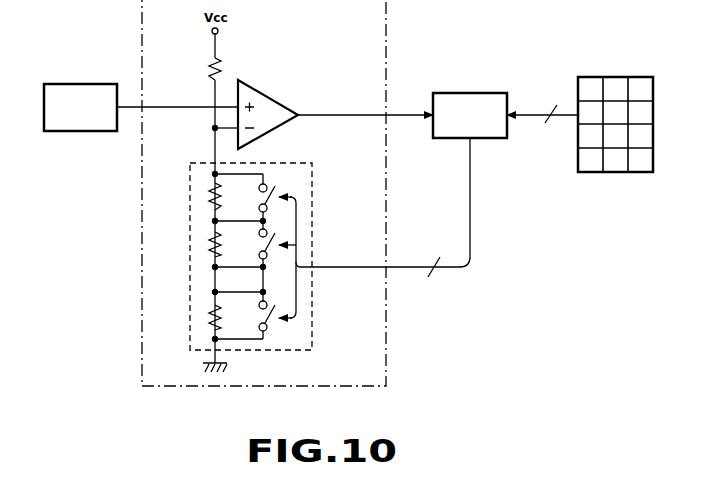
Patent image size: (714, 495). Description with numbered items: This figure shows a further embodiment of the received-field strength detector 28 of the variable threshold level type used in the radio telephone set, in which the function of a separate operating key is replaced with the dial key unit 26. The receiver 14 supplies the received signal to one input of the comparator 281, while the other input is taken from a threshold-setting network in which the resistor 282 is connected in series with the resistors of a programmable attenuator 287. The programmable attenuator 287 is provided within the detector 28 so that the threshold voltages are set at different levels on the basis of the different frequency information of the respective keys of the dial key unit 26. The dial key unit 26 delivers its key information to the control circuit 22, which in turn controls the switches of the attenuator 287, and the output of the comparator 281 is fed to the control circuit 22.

The receiver 14 is at (78, 83).
The control circuit 22 is at (465, 92).
The dial key unit 26 is at (615, 76).
The received-field strength detector 28 is at (387, 360).
The comparator 281 is at (280, 102).
The resistor 282 is at (222, 68).
The programmable attenuator 287 is at (313, 213).